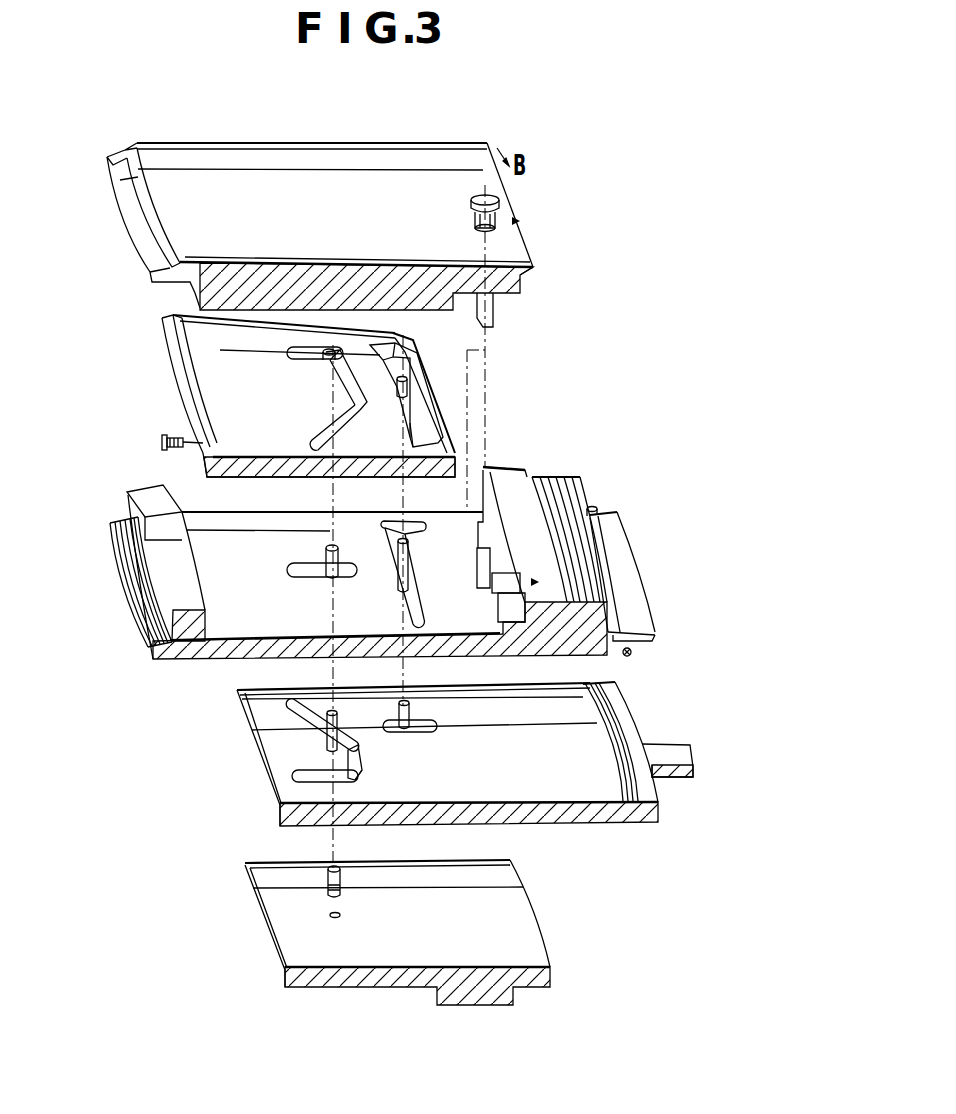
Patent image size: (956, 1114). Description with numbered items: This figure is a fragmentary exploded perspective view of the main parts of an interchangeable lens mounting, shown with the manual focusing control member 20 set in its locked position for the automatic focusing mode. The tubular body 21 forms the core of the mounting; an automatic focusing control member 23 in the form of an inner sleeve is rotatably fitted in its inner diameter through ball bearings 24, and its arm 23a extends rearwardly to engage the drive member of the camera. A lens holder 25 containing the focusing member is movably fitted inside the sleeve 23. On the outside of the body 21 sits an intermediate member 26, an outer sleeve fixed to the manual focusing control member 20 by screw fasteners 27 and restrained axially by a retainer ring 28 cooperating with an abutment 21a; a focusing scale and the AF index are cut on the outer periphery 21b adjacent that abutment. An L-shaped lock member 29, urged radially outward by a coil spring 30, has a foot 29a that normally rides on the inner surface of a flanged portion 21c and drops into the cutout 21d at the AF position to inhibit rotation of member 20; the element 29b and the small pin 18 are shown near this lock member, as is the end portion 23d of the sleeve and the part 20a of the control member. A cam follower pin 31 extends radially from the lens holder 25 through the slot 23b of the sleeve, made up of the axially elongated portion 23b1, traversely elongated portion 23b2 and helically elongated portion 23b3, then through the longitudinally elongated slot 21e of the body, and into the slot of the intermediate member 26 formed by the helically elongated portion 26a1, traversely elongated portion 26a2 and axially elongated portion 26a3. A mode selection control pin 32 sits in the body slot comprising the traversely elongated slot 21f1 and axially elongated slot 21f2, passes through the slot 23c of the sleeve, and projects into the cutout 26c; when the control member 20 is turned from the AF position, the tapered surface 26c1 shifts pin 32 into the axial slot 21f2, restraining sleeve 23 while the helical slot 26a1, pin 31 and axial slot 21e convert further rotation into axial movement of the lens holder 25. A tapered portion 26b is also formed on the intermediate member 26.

The pin 18 is at (599, 508).
The manual focusing control member 20 is at (365, 148).
The projection of cover member 20a is at (525, 279).
The tubular body 21 is at (640, 622).
The abutment 21a is at (487, 466).
The outer periphery 21b is at (555, 488).
The flanged portion 21c is at (603, 535).
The cutout 21d is at (640, 600).
The longitudinally elongated slot 21e is at (305, 571).
The traversely elongated slot 21f1 is at (424, 606).
The axially elongated slot 21f2 is at (420, 529).
The automatic focusing control member 23 is at (560, 792).
The arm 23a is at (670, 760).
The slot 23b is at (358, 760).
The axially elongated portion 23b1 is at (292, 775).
The traversely elongated portion 23b2 is at (360, 777).
The helically elongated portion 23b3 is at (290, 712).
The slot 23c is at (432, 732).
The ribbed end of slide plate 23d is at (628, 805).
The ball bearings 24 is at (630, 656).
The lens holder 25 is at (540, 943).
The intermediate member 26 is at (270, 452).
The helically elongated portion 26a1 is at (317, 442).
The traversely elongated portion 26a2 is at (356, 408).
The axially elongated portion 26a3 is at (300, 357).
The tapered portion 26b is at (412, 338).
The cutout 26c is at (425, 403).
The tapered surface 26c1 is at (415, 423).
The screw fasteners 27 is at (160, 441).
The retainer ring 28 is at (178, 588).
The lock member 29 is at (498, 194).
The foot 29a is at (505, 593).
The button stem 29b is at (497, 216).
The coil spring 30 is at (500, 220).
The cam follower pin 31 is at (327, 362).
The mode selection control pin 32 is at (408, 383).